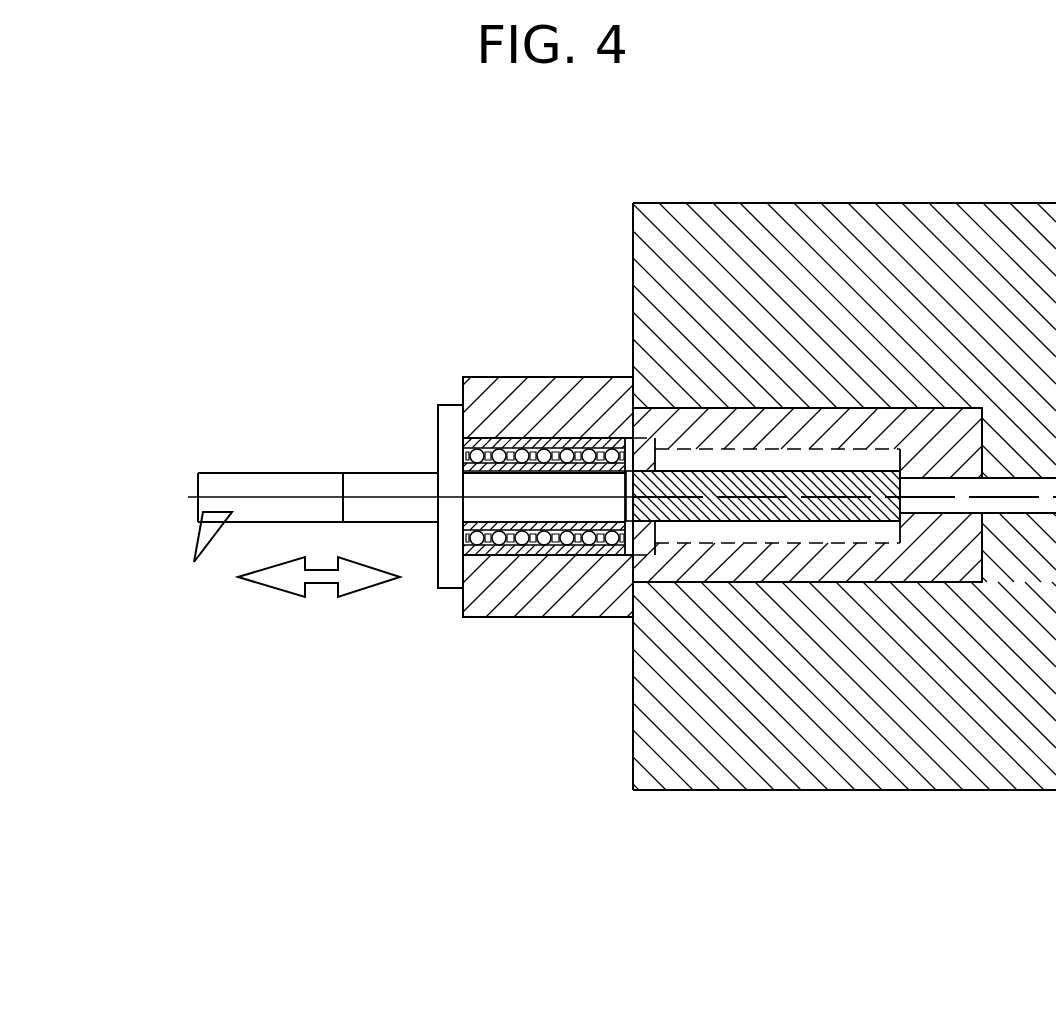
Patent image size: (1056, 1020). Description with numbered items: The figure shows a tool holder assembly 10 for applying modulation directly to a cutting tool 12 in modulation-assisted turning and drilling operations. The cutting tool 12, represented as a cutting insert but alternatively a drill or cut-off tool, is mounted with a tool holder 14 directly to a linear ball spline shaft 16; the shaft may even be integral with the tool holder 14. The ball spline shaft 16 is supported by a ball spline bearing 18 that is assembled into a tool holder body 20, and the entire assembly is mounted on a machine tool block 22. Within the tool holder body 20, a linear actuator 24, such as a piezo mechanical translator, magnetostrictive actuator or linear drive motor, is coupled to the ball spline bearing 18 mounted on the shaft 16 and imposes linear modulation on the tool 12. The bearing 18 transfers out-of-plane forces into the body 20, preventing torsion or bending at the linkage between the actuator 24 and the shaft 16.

The tool holder assembly 10 is at (462, 737).
The cutting tool 12 is at (205, 518).
The tool holder 14 is at (248, 490).
The linear ball spline shaft 16 is at (357, 485).
The ball spline bearing 18 is at (498, 452).
The tool holder body 20 is at (543, 387).
The machine tool block 22 is at (870, 760).
The linear actuator 24 is at (702, 487).